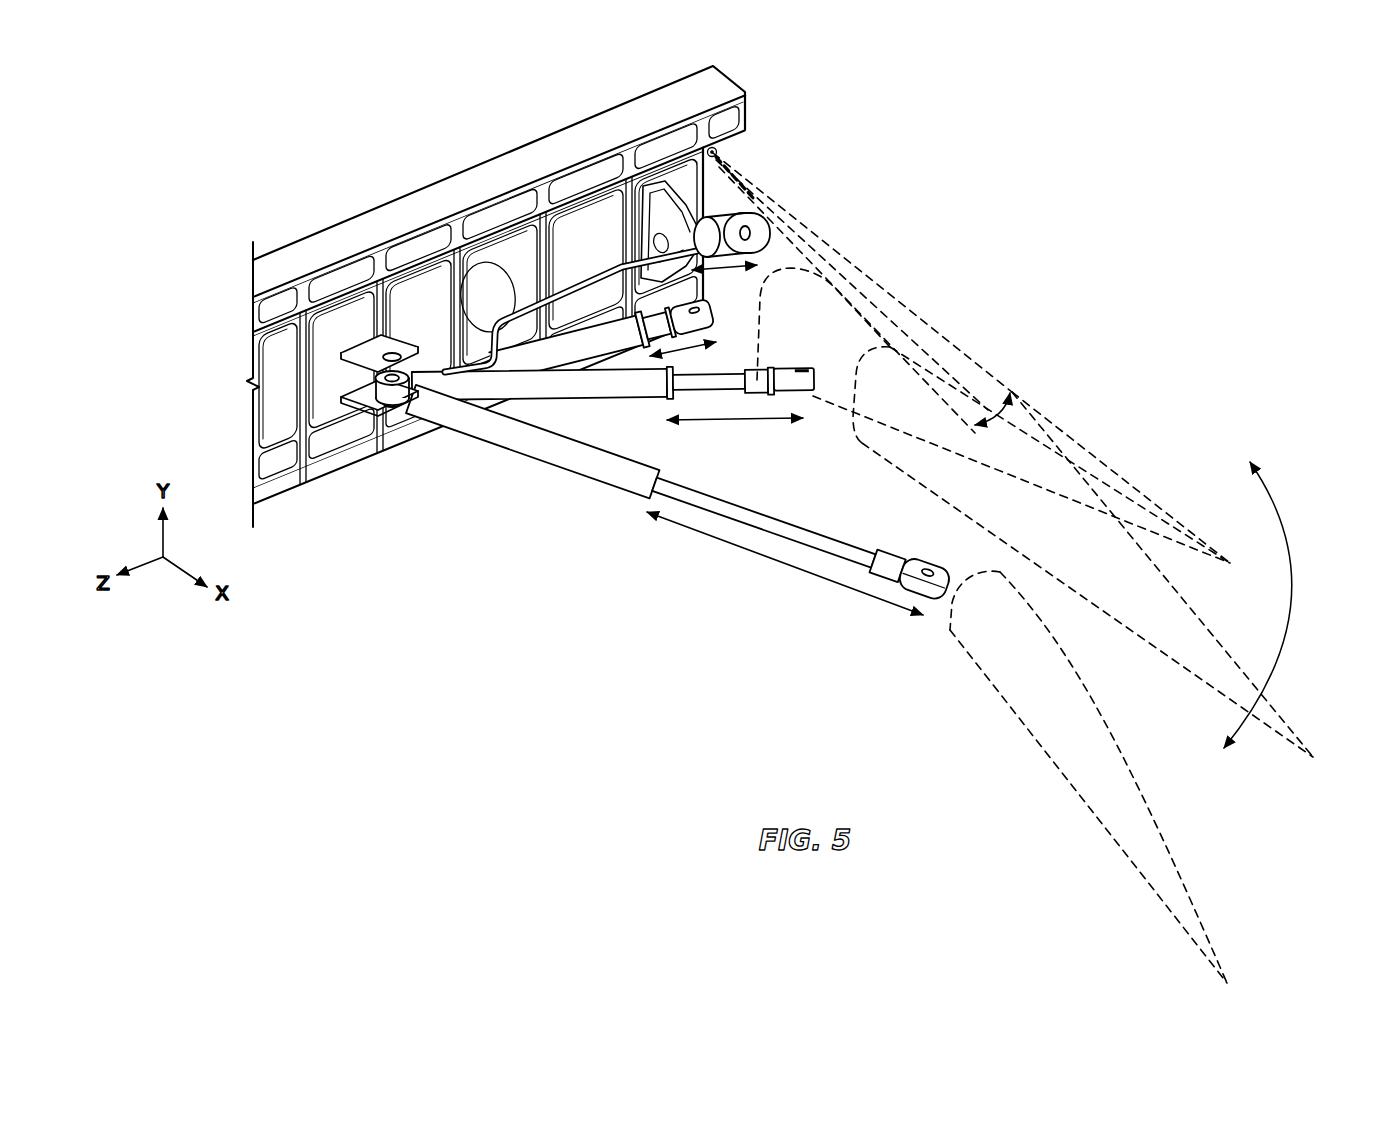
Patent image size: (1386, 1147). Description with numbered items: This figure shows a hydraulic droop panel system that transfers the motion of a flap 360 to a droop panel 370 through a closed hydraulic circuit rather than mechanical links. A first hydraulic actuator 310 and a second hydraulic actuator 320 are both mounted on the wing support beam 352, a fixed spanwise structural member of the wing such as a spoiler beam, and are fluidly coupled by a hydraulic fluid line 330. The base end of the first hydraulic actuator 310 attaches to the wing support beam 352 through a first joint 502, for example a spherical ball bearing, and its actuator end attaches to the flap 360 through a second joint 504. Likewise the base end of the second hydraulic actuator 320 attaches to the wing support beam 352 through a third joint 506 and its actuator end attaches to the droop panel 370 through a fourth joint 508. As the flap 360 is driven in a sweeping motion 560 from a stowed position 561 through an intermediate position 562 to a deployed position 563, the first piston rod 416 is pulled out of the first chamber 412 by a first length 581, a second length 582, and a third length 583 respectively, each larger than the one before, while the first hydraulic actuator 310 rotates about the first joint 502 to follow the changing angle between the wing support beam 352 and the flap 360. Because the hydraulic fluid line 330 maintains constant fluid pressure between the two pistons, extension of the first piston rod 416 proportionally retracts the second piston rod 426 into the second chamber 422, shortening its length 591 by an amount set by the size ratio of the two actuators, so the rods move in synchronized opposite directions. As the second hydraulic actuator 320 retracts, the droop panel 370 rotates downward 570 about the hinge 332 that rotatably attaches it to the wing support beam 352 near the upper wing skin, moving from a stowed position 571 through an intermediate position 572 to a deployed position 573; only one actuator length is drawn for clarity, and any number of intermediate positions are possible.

The wing support beam 352 is at (514, 158).
The third joint 506 is at (695, 221).
The second chamber 422 is at (693, 217).
The hinge 332 is at (717, 153).
The second hydraulic actuator 320 is at (758, 201).
The droop panel 370 is at (957, 204).
The stowed position 571 is at (838, 253).
The intermediate position 572 is at (873, 284).
The deployed position 573 is at (910, 322).
The second piston rod 426 is at (732, 223).
The hydraulic fluid line 330 is at (583, 290).
The first joint 502 is at (393, 377).
The length 591 is at (733, 271).
The fourth joint 508 is at (752, 246).
The first length 581 is at (683, 352).
The flap 360 is at (1215, 380).
The downward rotation 570 is at (1015, 392).
The stowed position 561 is at (1092, 448).
The second length 582 is at (749, 420).
The first chamber 412 is at (628, 467).
The first piston rod 416 is at (777, 523).
The second joint 504 is at (925, 578).
The first hydraulic actuator 310 is at (505, 510).
The sweeping motion 560 is at (1288, 535).
The intermediate position 562 is at (1200, 620).
The third length 583 is at (773, 557).
The deployed position 563 is at (1122, 730).